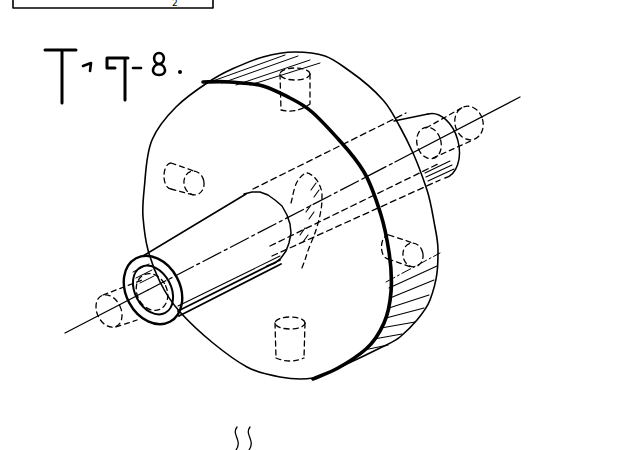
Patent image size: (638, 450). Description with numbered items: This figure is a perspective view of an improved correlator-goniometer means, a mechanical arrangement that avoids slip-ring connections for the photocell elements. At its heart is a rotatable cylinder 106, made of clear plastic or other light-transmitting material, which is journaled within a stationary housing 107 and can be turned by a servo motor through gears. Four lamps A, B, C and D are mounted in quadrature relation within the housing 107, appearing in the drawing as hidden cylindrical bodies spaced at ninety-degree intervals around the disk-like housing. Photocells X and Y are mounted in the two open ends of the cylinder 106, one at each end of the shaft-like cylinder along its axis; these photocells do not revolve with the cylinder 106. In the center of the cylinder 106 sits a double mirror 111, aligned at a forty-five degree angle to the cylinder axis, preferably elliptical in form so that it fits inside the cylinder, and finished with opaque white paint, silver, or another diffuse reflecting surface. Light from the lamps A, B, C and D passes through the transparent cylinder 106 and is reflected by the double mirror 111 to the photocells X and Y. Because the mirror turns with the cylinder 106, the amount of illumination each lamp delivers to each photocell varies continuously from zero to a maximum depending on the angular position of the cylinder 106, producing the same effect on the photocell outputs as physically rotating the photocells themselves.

The lamp A is at (296, 66).
The lamp B is at (425, 259).
The lamp C is at (290, 368).
The lamp D is at (160, 173).
The photocell X is at (128, 322).
The photocell Y is at (462, 145).
The rotatable cylinder 106 is at (411, 113).
The stationary housing 107 is at (386, 340).
The double mirror 111 is at (304, 254).